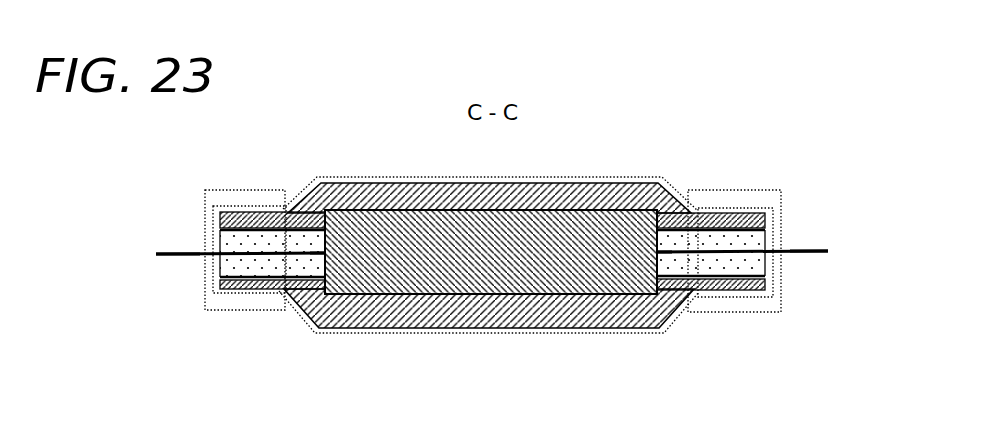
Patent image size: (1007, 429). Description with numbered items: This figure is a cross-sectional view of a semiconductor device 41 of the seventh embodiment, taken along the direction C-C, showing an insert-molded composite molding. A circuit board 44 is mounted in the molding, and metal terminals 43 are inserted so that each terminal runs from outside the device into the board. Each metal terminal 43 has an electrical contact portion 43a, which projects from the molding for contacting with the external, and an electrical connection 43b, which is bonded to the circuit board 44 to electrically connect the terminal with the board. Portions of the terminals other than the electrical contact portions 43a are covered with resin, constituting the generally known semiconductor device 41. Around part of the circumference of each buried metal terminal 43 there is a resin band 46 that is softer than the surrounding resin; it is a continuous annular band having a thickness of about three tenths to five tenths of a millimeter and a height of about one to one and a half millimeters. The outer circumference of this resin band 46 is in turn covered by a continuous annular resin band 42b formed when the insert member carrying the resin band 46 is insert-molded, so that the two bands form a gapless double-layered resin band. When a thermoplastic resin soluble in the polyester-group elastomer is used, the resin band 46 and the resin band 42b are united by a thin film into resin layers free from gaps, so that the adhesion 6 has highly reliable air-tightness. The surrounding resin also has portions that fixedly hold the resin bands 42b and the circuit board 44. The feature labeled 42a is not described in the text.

The adhesion 6 is at (250, 311).
The semiconductor device 41 is at (354, 188).
The outer coating layer 42a is at (570, 193).
The resin band 42b is at (256, 212).
The metal terminal 43 is at (171, 253).
The electrical contact portion 43a is at (184, 257).
The electrical connection 43b is at (324, 258).
The circuit board 44 is at (492, 288).
The resin band 46 is at (232, 240).